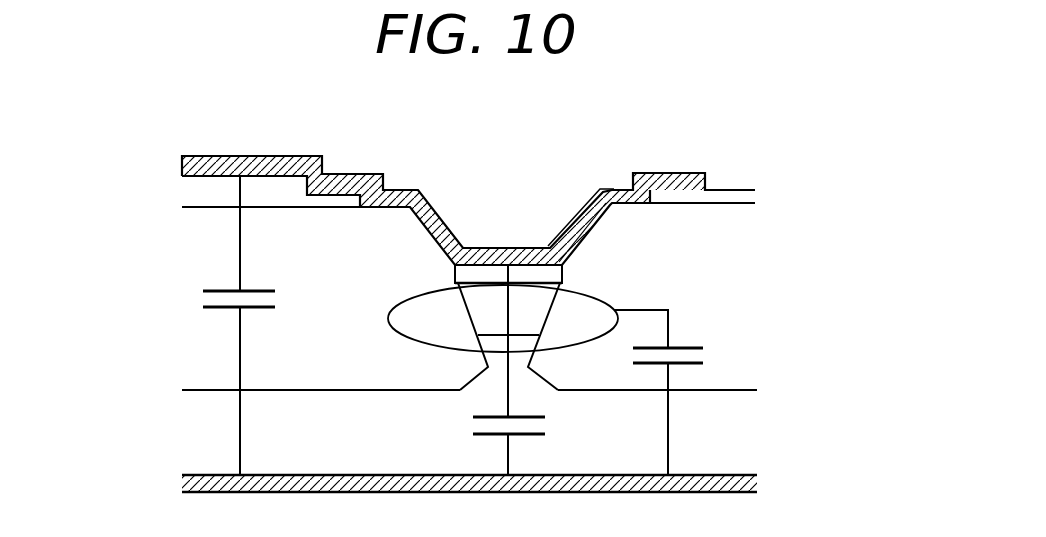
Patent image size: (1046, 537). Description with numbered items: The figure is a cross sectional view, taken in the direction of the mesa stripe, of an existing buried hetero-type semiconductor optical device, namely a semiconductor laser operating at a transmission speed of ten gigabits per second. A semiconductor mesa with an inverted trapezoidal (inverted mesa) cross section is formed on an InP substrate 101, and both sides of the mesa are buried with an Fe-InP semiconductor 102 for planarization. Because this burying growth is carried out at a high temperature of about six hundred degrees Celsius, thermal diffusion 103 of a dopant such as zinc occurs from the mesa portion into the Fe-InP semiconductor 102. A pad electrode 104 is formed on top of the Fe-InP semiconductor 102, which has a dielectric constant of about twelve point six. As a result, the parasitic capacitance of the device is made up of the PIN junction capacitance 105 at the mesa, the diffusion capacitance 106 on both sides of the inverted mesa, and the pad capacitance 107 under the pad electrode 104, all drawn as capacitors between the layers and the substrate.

The InP substrate 101 is at (713, 427).
The Fe-InP semiconductor 102 is at (732, 259).
The thermal diffusion 103 is at (597, 293).
The pad electrode 104 is at (198, 158).
The PIN junction capacitance 105 is at (470, 425).
The diffusion capacitance 106 is at (705, 353).
The pad capacitance 107 is at (205, 297).